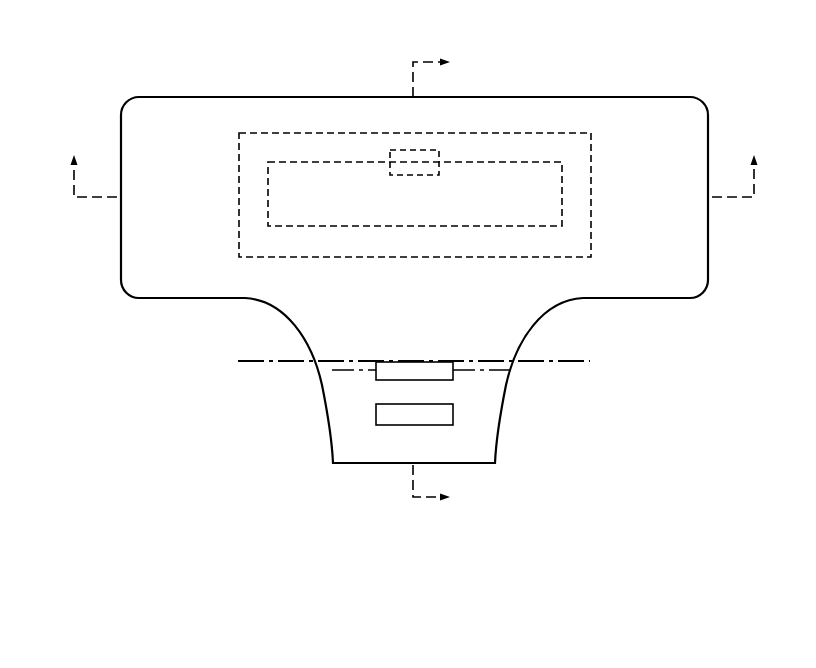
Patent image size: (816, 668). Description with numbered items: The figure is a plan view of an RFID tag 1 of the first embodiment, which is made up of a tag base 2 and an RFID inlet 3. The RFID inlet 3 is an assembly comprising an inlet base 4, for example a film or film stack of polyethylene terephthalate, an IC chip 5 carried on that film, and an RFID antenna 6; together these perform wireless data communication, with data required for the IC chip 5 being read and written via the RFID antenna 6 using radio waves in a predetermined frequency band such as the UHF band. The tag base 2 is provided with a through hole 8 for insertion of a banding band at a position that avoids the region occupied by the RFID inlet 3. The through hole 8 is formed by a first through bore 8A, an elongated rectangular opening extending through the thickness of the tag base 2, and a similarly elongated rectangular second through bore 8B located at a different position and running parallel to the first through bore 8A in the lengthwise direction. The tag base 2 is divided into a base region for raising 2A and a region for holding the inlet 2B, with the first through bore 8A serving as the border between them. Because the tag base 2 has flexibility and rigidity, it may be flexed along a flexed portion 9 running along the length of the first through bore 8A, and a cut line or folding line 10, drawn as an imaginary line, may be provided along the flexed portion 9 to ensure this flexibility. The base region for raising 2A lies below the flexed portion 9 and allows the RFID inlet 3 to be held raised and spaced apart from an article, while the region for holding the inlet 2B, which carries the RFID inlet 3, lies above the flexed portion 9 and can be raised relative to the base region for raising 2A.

The RFID tag 1 is at (562, 85).
The tag base 2 is at (709, 258).
The base region for raising 2A is at (309, 418).
The region for holding the inlet 2B is at (108, 266).
The RFID inlet 3 is at (504, 121).
The inlet base 4 is at (592, 155).
The IC chip 5 is at (408, 150).
The RFID antenna 6 is at (563, 196).
The through hole 8 is at (583, 375).
The first through bore 8A is at (420, 362).
The second through bore 8B is at (420, 425).
The flexed portion 9 is at (276, 361).
The cut line or folding line 10 is at (332, 369).